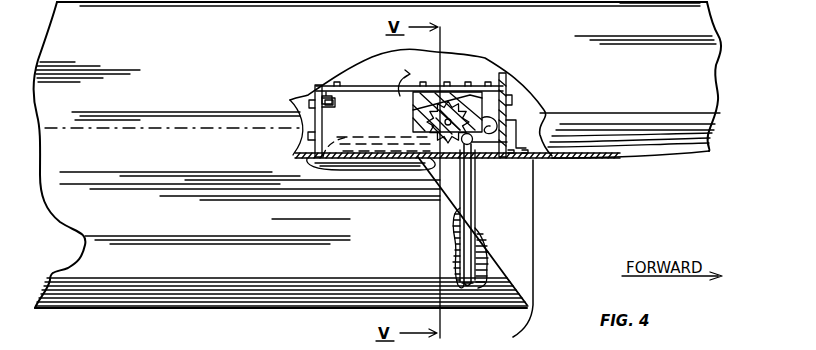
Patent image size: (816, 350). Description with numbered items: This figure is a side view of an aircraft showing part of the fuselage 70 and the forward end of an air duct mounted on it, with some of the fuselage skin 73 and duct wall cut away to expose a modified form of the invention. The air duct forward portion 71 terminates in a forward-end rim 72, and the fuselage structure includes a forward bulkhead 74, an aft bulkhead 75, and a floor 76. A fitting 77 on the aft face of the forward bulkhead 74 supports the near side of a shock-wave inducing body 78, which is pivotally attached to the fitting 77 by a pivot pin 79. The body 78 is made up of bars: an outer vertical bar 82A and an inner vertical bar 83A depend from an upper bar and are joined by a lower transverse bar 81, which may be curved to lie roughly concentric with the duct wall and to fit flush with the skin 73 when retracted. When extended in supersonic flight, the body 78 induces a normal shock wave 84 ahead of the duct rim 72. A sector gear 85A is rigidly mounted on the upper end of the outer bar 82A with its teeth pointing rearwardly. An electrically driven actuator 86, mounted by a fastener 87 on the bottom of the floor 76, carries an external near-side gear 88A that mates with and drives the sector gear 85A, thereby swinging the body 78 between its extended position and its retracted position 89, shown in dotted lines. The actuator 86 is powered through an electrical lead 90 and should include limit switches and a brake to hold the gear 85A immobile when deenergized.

The fuselage 70 is at (667, 159).
The air duct forward portion 71 is at (382, 267).
The forward-end rim 72 is at (520, 286).
The fuselage skin 73 is at (158, 47).
The forward bulkhead 74 is at (503, 112).
The aft bulkhead 75 is at (310, 110).
The floor 76 is at (353, 86).
The fitting 77 is at (493, 113).
The shock-wave inducing body 78 is at (486, 221).
The pivot pin 79 is at (492, 159).
The lower transverse bar 81 is at (467, 290).
The outer vertical bar 82A is at (475, 194).
The inner vertical bar 83A is at (478, 229).
The normal shock wave 84 is at (534, 234).
The sector gear 85A is at (464, 143).
The electrically driven actuator 86 is at (484, 92).
The fastener 87 is at (465, 92).
The near-side gear 88A is at (336, 96).
The retracted position of shock-wave inducing body 89 is at (374, 139).
The electrical lead 90 is at (414, 74).